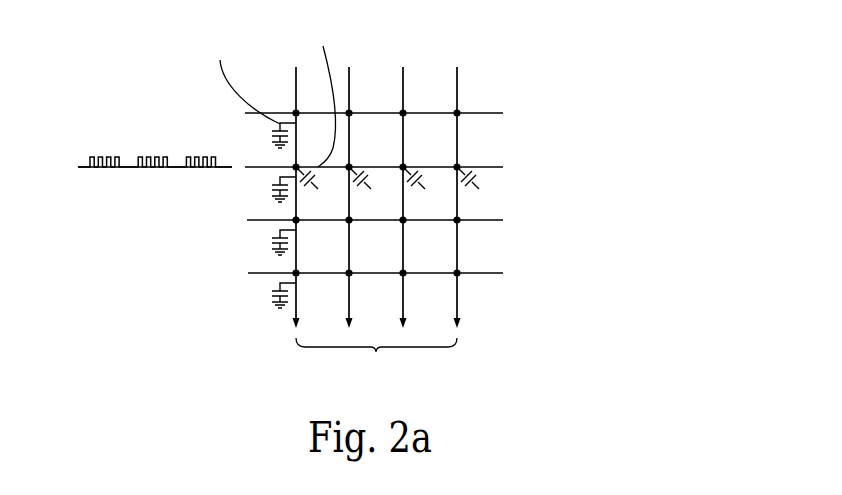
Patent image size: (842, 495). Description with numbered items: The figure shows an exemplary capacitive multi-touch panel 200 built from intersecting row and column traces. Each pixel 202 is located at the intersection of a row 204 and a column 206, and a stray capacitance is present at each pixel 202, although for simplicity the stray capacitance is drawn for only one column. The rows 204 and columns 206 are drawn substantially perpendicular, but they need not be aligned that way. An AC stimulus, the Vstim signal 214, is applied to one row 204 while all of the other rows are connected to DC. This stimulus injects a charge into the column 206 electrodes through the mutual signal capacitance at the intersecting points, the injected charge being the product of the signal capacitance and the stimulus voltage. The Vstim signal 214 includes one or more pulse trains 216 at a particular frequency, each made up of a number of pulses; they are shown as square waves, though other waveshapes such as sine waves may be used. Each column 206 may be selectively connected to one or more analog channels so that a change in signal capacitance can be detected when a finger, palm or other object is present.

The capacitive multi-touch panel 200 is at (653, 175).
The pixel 202 is at (458, 113).
The row 204 is at (492, 115).
The column 206 is at (458, 205).
The Vstim signal 214 is at (37, 173).
The pulse train 216 is at (123, 153).